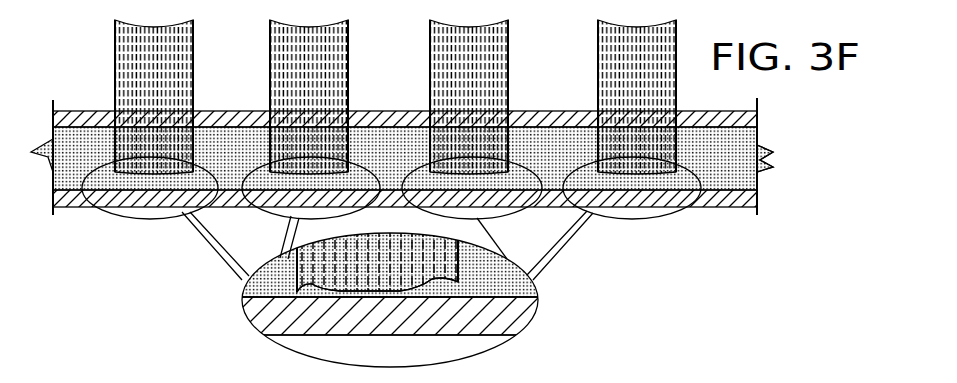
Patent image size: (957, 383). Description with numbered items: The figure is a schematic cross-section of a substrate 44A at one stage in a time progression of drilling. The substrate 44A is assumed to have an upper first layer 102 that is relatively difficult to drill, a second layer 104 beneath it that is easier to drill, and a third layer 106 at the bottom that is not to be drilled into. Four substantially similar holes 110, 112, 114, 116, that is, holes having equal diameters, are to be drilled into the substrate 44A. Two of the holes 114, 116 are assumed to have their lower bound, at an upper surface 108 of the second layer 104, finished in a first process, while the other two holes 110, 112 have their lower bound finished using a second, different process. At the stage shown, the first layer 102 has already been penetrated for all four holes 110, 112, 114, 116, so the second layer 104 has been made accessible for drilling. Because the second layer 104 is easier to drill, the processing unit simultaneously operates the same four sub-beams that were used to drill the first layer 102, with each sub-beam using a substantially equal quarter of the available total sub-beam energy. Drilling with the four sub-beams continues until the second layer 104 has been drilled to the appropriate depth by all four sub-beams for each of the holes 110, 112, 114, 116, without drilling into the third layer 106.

The first layer 102 is at (748, 119).
The second layer 104 is at (748, 172).
The third layer 106 is at (757, 199).
The upper surface 108 is at (53, 182).
The hole 110 is at (136, 254).
The hole 112 is at (259, 227).
The hole 114 is at (505, 226).
The hole 116 is at (637, 213).
The substrate 44A is at (790, 162).